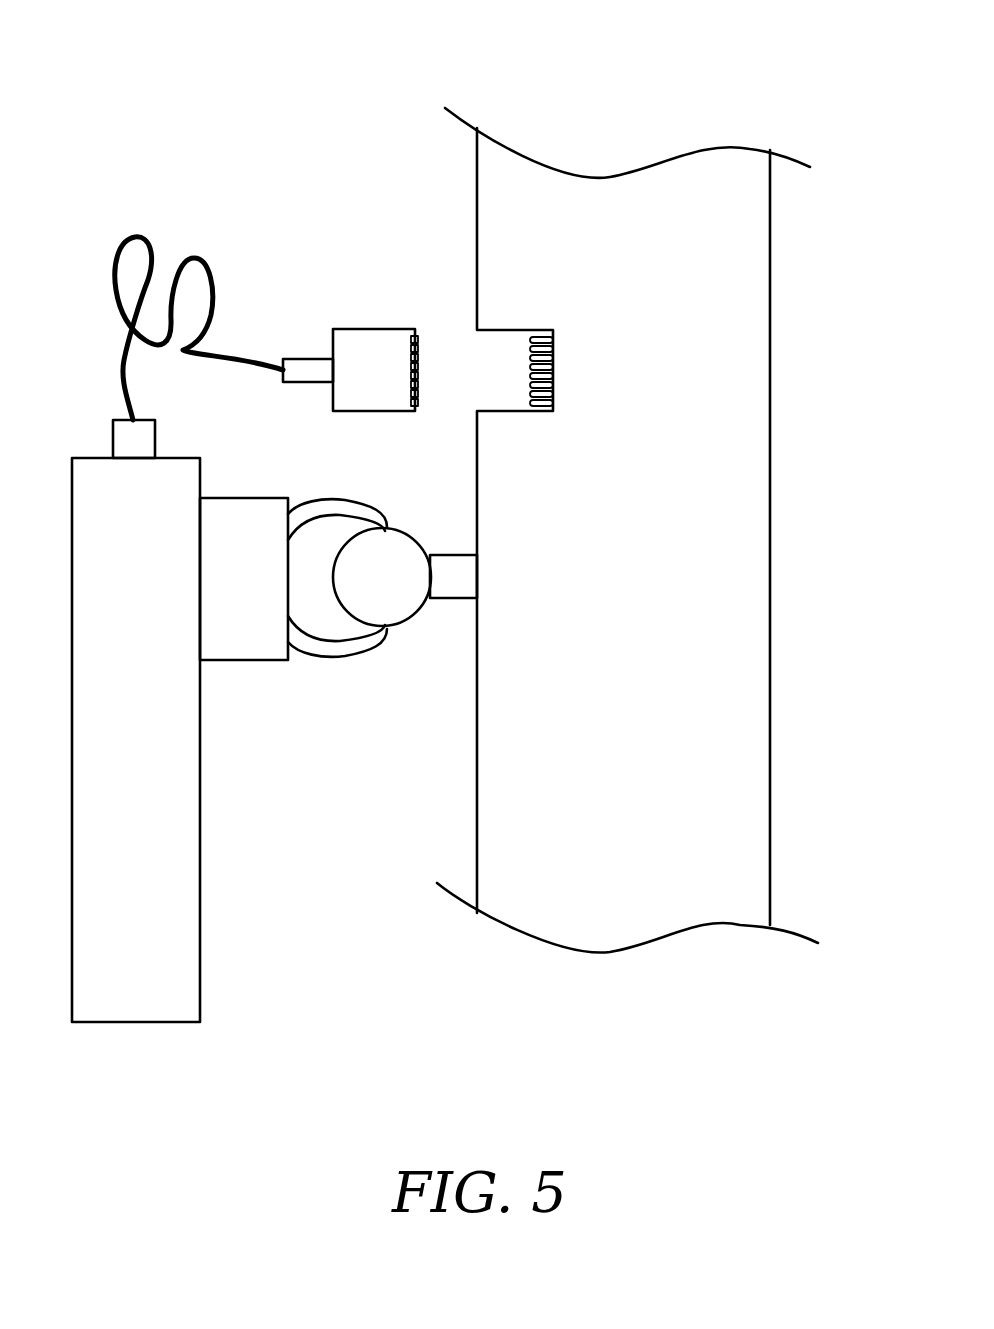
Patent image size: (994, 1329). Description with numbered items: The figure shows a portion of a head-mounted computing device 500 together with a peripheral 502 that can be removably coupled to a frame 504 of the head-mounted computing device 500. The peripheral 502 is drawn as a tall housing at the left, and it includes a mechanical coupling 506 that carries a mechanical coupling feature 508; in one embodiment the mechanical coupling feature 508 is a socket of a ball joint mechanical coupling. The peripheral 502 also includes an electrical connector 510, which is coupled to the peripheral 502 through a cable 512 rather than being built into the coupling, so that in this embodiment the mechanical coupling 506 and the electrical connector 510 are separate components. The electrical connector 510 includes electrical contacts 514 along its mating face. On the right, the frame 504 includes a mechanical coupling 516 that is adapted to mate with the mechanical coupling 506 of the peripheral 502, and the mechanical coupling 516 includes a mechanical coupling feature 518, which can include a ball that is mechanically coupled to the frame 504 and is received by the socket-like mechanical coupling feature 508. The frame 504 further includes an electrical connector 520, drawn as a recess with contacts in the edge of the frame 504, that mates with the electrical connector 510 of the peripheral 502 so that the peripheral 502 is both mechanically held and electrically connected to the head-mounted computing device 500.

The head-mounted computing device 500 is at (647, 68).
The peripheral 502 is at (160, 748).
The frame 504 is at (652, 570).
The mechanical coupling 506 is at (313, 497).
The mechanical coupling feature 508 is at (340, 500).
The electrical connector 510 is at (374, 329).
The cable 512 is at (188, 260).
The electrical contacts 514 is at (418, 361).
The mechanical coupling 516 is at (423, 527).
The mechanical coupling feature 518 is at (410, 588).
The electrical connector 520 is at (555, 360).